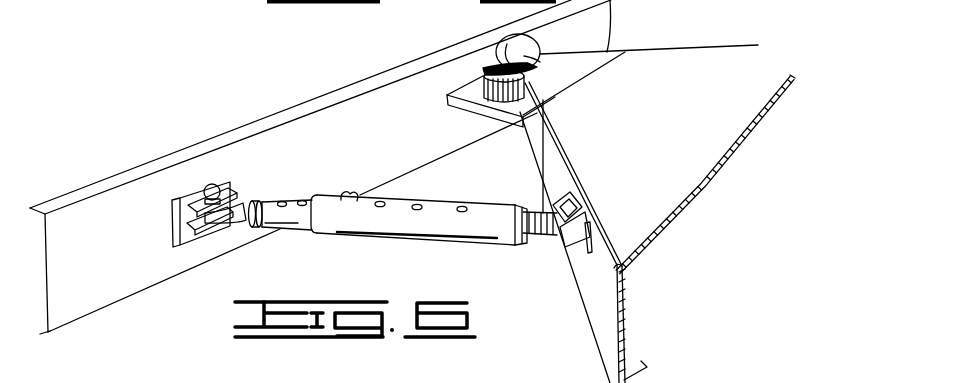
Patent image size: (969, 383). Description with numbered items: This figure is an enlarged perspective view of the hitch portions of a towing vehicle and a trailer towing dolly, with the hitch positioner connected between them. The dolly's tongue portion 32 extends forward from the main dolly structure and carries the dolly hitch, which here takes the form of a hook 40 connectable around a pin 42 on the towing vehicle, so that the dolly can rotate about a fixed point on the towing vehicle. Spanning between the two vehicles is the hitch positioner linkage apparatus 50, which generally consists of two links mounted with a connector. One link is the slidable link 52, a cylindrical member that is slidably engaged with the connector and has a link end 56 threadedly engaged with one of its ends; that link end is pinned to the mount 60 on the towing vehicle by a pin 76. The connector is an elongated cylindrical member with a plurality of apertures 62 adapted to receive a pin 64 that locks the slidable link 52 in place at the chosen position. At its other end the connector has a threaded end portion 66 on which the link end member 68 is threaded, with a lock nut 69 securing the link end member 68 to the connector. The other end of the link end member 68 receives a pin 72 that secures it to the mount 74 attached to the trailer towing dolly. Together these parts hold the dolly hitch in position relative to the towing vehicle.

The tongue portion 32 is at (622, 62).
The hook 40 is at (484, 68).
The pin 42 is at (505, 36).
The hitch positioner linkage apparatus 50 is at (318, 257).
The slidable link 52 is at (296, 201).
The link end 56 is at (250, 201).
The mount 60 is at (178, 231).
The apertures 62 is at (382, 201).
The pin 64 is at (355, 195).
The threaded end portion 66 is at (423, 233).
The link end member 68 is at (535, 208).
The lock nut 69 is at (510, 244).
The pin 72 is at (573, 190).
The mount 74 is at (584, 223).
The pin 76 is at (208, 185).